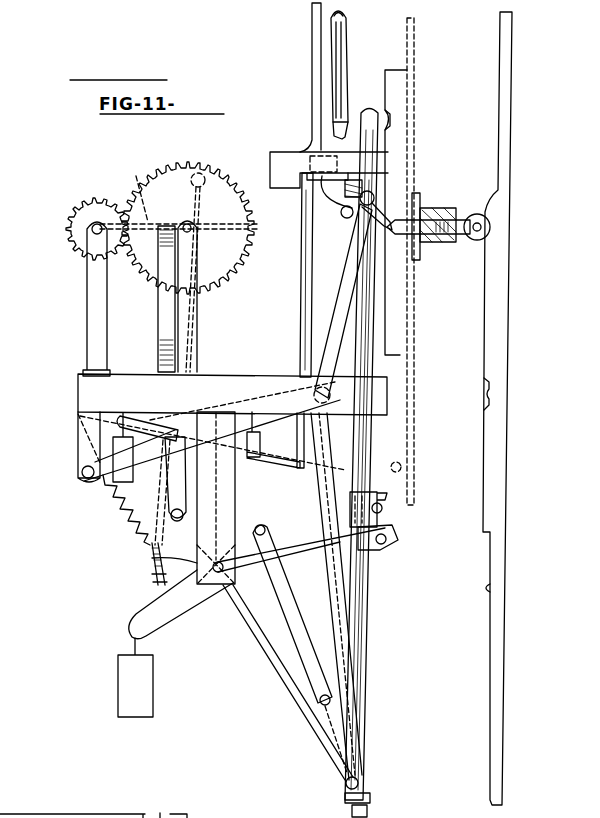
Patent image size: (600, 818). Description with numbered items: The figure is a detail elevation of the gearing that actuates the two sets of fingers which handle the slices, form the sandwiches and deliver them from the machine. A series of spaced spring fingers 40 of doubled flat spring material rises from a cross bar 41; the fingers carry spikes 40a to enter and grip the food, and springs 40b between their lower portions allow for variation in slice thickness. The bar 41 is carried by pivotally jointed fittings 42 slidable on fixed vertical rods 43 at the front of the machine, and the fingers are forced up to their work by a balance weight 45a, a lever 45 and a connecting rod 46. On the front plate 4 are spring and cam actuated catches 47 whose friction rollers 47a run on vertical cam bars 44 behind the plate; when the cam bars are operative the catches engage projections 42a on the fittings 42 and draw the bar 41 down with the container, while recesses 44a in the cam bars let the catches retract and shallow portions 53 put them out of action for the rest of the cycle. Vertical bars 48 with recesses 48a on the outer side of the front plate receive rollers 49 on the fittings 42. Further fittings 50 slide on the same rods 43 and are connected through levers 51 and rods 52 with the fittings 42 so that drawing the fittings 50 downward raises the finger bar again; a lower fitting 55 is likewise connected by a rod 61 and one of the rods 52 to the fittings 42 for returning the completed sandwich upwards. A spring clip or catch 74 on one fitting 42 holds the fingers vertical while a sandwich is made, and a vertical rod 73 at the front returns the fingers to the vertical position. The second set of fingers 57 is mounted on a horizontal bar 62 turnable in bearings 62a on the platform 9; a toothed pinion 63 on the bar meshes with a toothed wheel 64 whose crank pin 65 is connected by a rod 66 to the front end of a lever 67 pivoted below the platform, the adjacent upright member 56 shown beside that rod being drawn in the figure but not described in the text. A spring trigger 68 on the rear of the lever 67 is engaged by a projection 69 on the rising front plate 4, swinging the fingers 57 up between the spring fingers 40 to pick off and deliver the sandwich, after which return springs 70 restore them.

The front plate 4 is at (414, 382).
The platform or table 9 is at (118, 402).
The spring fingers 40 is at (342, 59).
The spikes 40a is at (349, 72).
The springs 40b is at (345, 125).
The cross bar 41 is at (314, 180).
The pivotally jointed fittings 42 is at (362, 187).
The projections 42a is at (387, 229).
The vertical rods 43 is at (355, 714).
The cam bars 44 is at (500, 148).
The recesses 44a is at (490, 395).
The lever 45 is at (97, 443).
The balance weight 45a is at (150, 450).
The connecting rod 46 is at (301, 327).
The spring and cam actuated catches 47 is at (422, 244).
The friction rollers 47a is at (491, 230).
The vertical bars 48 is at (396, 90).
The recesses 48a is at (390, 128).
The rollers 49 is at (382, 160).
The further fittings 50 is at (387, 498).
The levers 51 is at (148, 467).
The rods 52 is at (348, 290).
The shallow portions 53 is at (487, 588).
The lower fitting 55 is at (347, 793).
The arm 56 is at (165, 259).
The fingers of the second set 57 is at (135, 188).
The rod 61 is at (340, 600).
The horizontal bar 62 is at (73, 215).
The bearings 62a is at (92, 232).
The toothed pinion 63 is at (92, 206).
The toothed wheel 64 is at (236, 249).
The crank pin 65 is at (200, 175).
The rod 66 is at (160, 347).
The lever 67 is at (286, 560).
The spring trigger 68 is at (396, 539).
The projection 69 is at (401, 468).
The return springs 70 is at (152, 543).
The vertical rod 73 is at (313, 33).
The spring clip or catch 74 is at (280, 166).